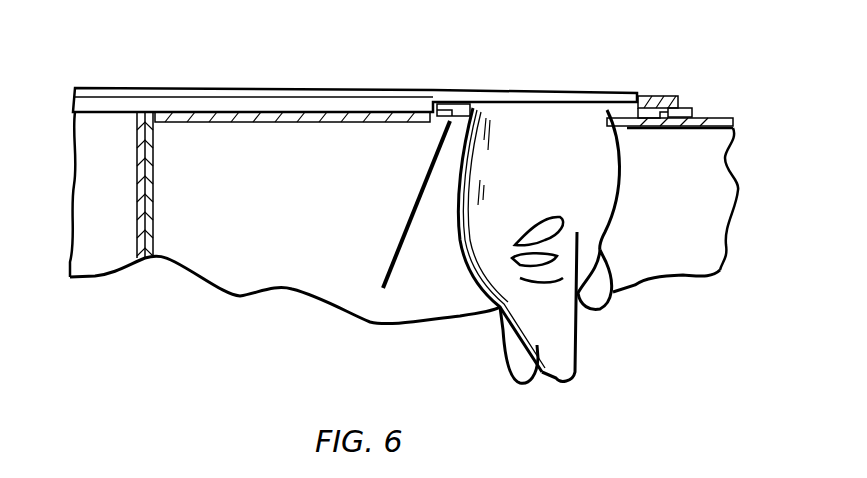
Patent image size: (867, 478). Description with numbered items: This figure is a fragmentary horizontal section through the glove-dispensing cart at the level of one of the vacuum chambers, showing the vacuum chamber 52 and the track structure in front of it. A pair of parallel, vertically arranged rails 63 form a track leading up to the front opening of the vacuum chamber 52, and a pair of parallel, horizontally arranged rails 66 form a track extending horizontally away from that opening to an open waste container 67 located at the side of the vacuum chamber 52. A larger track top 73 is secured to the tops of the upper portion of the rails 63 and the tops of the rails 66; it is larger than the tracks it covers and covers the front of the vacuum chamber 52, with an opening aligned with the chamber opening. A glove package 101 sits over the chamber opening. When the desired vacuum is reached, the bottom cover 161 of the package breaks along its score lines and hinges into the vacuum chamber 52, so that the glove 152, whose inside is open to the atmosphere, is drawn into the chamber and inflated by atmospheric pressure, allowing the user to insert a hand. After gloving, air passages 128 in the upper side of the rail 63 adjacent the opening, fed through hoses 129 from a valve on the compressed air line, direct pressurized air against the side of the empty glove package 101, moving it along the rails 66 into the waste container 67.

The vacuum chamber 52 is at (722, 172).
The vertically arranged rails 63 is at (678, 104).
The horizontally arranged rails 66 is at (240, 100).
The waste container 67 is at (100, 262).
The track top 73 is at (288, 93).
The glove package 101 is at (452, 96).
The air passages 128 is at (665, 100).
The hoses 129 is at (690, 113).
The glove 152 is at (500, 307).
The bottom cover 161 is at (410, 210).